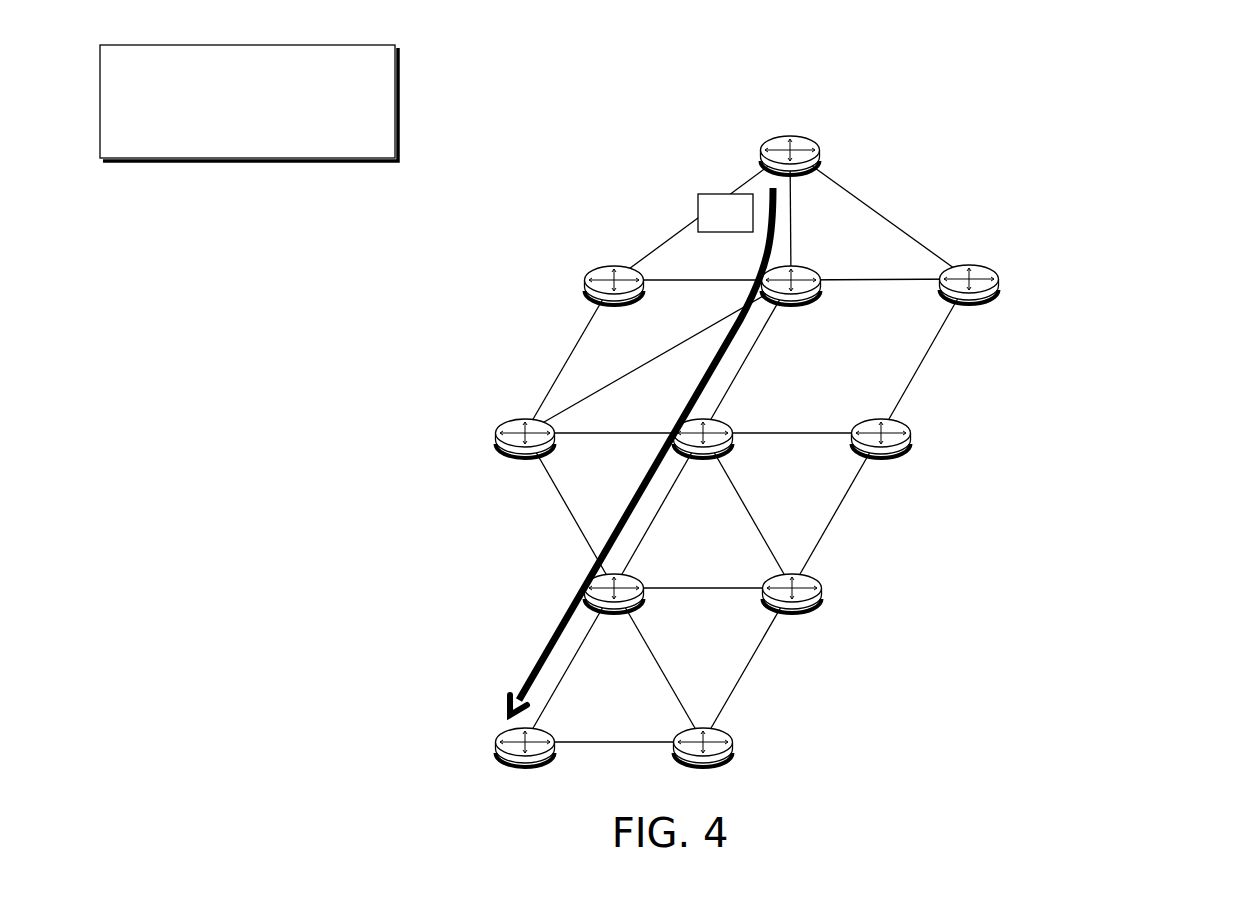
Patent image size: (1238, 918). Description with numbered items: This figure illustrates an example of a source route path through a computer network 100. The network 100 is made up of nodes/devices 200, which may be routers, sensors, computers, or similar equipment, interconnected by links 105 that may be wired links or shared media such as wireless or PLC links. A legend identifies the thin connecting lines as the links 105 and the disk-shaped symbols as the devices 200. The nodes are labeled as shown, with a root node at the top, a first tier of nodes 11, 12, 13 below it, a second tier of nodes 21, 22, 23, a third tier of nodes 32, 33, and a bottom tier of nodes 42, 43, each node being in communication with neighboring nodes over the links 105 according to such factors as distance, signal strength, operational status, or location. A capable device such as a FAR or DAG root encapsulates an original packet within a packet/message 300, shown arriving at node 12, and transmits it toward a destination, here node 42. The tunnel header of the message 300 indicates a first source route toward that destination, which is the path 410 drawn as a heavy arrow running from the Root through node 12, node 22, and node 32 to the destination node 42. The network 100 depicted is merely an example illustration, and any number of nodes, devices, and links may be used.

The computer network 100 is at (1147, 99).
The links 105 is at (133, 73).
The nodes/devices 200 is at (571, 448).
The packet/message 300 is at (729, 262).
The path 410 is at (534, 645).
The node 11 is at (614, 302).
The node 12 is at (791, 302).
The node 13 is at (969, 301).
The node 21 is at (525, 455).
The node 22 is at (703, 455).
The node 23 is at (881, 455).
The node 32 is at (614, 610).
The node 33 is at (792, 610).
The node 42 is at (525, 764).
The node 43 is at (703, 764).